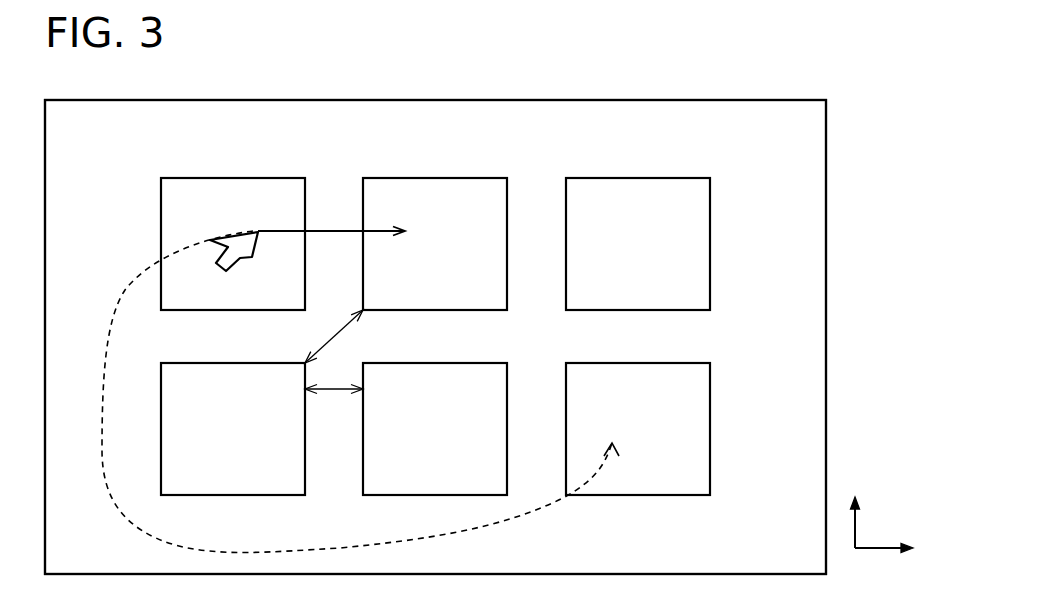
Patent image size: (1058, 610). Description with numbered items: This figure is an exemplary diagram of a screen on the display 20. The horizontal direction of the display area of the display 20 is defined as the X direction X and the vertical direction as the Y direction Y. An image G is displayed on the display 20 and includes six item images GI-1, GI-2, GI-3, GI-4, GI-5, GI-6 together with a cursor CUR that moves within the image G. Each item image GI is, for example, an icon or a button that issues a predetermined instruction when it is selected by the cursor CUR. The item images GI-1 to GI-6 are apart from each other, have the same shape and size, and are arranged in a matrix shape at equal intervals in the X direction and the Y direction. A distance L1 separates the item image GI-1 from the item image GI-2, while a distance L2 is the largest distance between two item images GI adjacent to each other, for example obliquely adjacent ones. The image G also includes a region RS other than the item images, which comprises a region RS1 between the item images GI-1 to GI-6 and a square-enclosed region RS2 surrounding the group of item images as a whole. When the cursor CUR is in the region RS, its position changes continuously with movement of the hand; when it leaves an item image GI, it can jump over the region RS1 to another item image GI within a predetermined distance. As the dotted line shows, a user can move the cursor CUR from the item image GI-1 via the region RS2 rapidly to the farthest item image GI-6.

The display 20 is at (829, 127).
The image G is at (829, 166).
The item image GI is at (438, 340).
The item image GI-1 is at (226, 178).
The item image GI-2 is at (432, 178).
The item image GI-3 is at (635, 178).
The item image GI-4 is at (202, 495).
The item image GI-5 is at (377, 495).
The item image GI-6 is at (633, 496).
The cursor CUR is at (210, 240).
The distance L1 is at (334, 404).
The distance L2 is at (334, 338).
The region RS1 is at (653, 340).
The region RS2 is at (767, 375).
The region RS is at (900, 311).
The X direction X is at (896, 550).
The Y direction Y is at (854, 508).